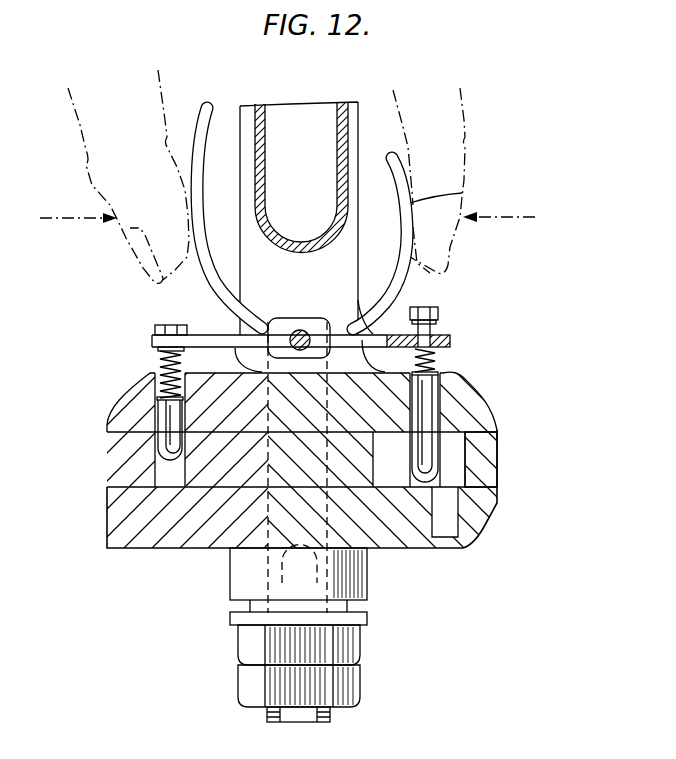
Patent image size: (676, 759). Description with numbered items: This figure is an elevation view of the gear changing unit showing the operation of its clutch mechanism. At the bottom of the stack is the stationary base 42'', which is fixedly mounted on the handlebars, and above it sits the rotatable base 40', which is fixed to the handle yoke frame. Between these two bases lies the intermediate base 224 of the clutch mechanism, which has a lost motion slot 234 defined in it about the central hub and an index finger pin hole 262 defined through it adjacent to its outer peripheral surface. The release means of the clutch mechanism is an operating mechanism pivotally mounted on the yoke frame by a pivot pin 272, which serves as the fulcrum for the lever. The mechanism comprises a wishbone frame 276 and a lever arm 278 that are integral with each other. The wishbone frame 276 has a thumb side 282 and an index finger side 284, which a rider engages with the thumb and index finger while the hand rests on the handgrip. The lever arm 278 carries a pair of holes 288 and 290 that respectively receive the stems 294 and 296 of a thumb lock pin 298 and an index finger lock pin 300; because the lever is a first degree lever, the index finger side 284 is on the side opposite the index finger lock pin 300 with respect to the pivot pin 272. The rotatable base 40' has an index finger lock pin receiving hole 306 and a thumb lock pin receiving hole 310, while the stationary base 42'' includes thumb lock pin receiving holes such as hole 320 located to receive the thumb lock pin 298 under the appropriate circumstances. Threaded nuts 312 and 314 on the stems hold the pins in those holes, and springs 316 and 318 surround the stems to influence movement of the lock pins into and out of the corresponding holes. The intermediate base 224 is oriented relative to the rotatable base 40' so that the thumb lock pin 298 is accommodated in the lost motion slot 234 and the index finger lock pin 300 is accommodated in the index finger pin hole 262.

The pivot pin 272 is at (300, 330).
The wishbone frame 276 is at (416, 166).
The lever arm 278 is at (370, 328).
The thumb side 282 is at (193, 152).
The index finger side 284 is at (462, 188).
The hole 288 is at (433, 332).
The hole 290 is at (166, 340).
The stem 294 is at (437, 317).
The stem 296 is at (160, 370).
The thumb lock pin 298 is at (442, 391).
The index finger lock pin 300 is at (158, 421).
The index finger lock pin receiving hole 306 is at (183, 403).
The thumb lock pin receiving hole 310 is at (417, 397).
The threaded nut 312 is at (433, 307).
The threaded nut 314 is at (182, 325).
The spring 316 is at (440, 357).
The spring 318 is at (162, 352).
The thumb lock pin receiving hole 320 is at (448, 527).
The intermediate base 224 is at (482, 461).
The lost motion slot 234 is at (457, 443).
The index finger pin hole 262 is at (125, 476).
The rotatable base 40' is at (327, 402).
The stationary base 42'' is at (327, 489).